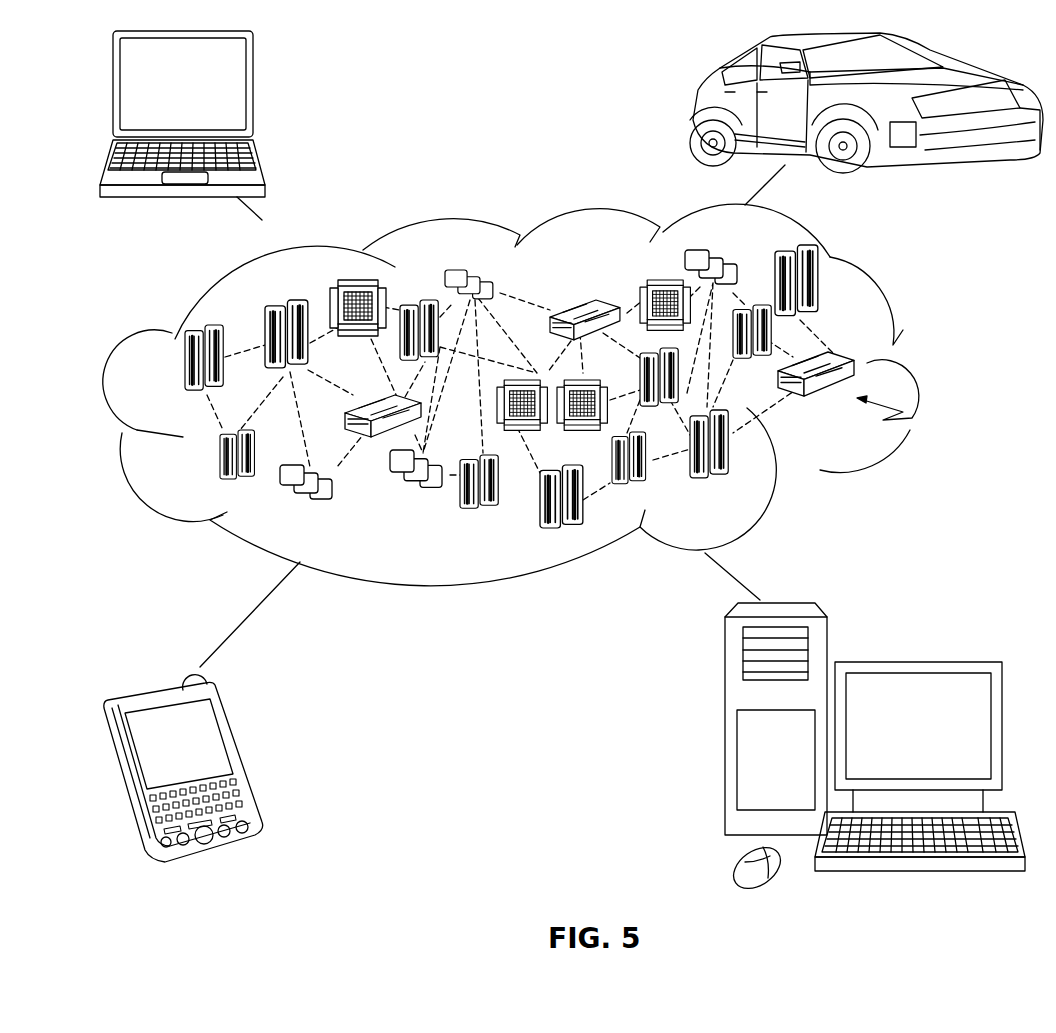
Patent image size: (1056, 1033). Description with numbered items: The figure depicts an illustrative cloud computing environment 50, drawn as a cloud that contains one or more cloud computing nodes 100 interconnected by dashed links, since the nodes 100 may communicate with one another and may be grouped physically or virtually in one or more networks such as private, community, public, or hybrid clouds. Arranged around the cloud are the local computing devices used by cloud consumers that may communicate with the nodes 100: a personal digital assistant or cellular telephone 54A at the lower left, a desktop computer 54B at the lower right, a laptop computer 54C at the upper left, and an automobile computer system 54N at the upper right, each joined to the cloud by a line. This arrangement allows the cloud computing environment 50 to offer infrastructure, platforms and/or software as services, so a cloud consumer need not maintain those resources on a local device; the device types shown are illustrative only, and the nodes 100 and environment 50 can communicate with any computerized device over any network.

The cloud computing environment 50 is at (918, 371).
The cloud computing nodes 100 is at (883, 420).
The personal digital assistant (PDA) or cellular telephone 54A is at (240, 758).
The desktop computer 54B is at (915, 660).
The laptop computer 54C is at (252, 92).
The automobile computer system 54N is at (696, 108).